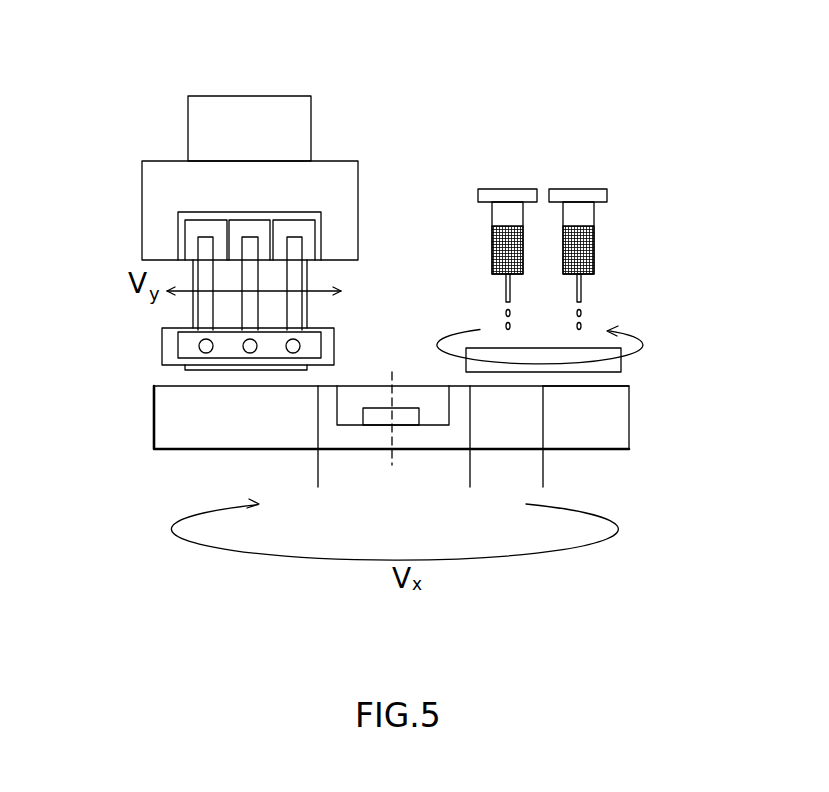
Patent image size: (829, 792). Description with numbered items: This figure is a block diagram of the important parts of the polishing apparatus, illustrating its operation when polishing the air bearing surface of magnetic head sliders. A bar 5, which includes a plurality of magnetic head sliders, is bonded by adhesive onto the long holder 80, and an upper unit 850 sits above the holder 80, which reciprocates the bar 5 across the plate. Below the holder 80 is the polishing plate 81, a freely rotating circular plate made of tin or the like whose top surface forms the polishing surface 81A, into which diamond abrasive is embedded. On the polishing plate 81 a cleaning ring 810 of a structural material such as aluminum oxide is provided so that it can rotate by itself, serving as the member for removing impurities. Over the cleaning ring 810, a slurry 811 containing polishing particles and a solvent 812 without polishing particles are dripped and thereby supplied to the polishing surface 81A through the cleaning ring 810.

The head unit 850 is at (142, 192).
The holder 80 is at (162, 337).
The bar 5 is at (192, 370).
The polishing plate 81 is at (623, 418).
The polishing surface 81A is at (617, 383).
The cleaning ring 810 is at (620, 363).
The slurry 811 is at (498, 262).
The solvent 812 is at (590, 266).